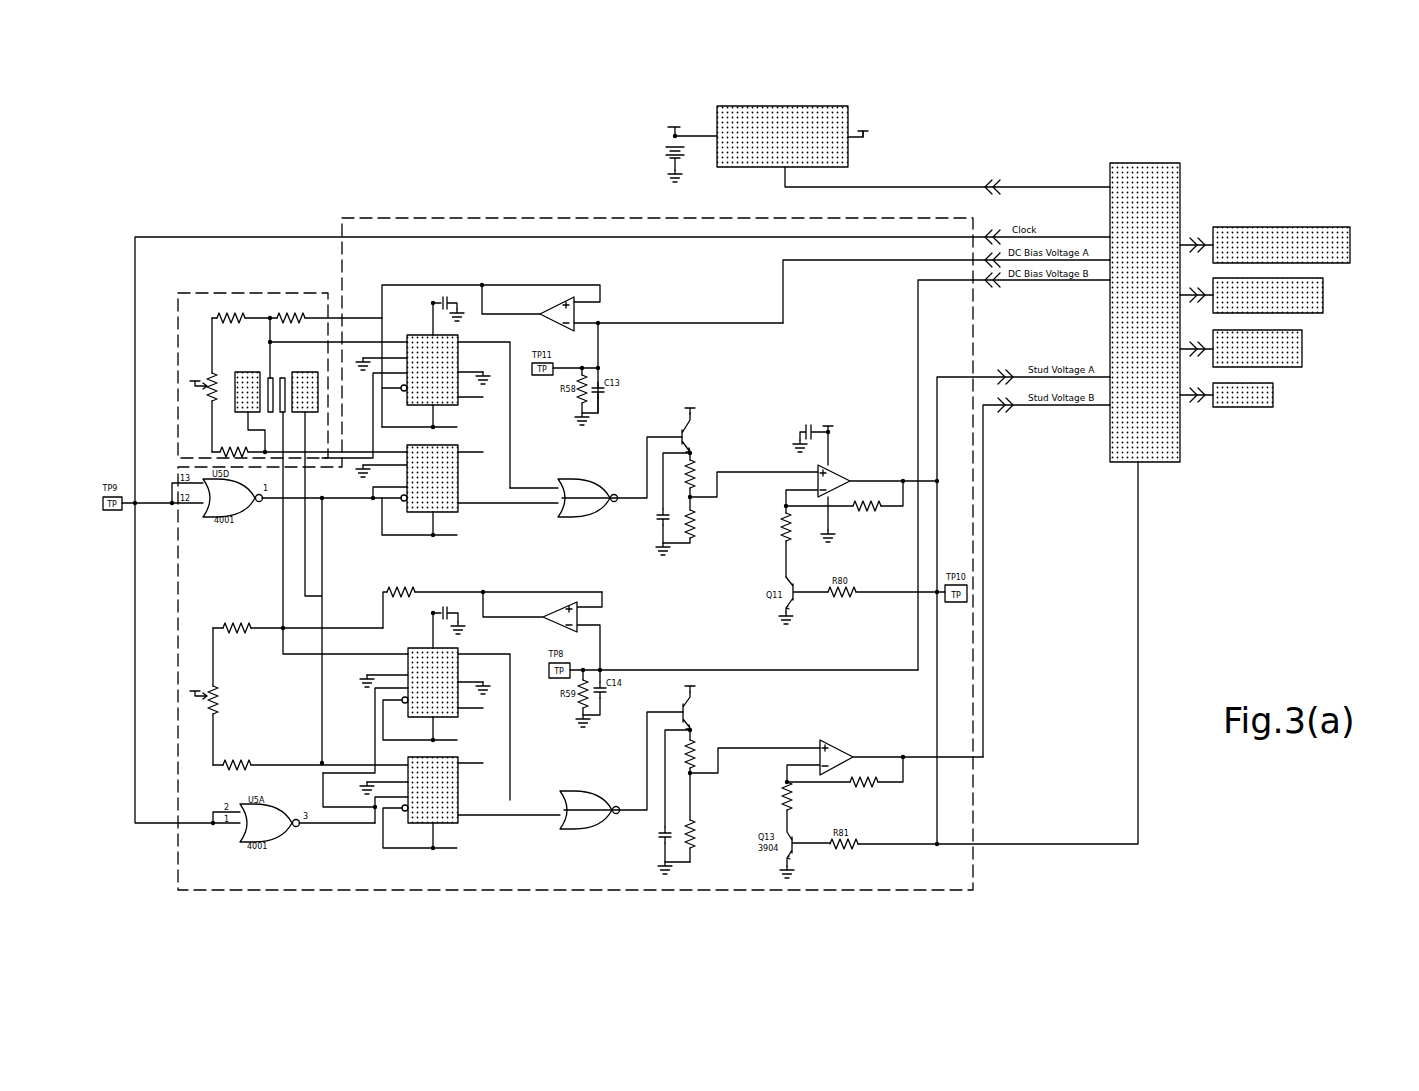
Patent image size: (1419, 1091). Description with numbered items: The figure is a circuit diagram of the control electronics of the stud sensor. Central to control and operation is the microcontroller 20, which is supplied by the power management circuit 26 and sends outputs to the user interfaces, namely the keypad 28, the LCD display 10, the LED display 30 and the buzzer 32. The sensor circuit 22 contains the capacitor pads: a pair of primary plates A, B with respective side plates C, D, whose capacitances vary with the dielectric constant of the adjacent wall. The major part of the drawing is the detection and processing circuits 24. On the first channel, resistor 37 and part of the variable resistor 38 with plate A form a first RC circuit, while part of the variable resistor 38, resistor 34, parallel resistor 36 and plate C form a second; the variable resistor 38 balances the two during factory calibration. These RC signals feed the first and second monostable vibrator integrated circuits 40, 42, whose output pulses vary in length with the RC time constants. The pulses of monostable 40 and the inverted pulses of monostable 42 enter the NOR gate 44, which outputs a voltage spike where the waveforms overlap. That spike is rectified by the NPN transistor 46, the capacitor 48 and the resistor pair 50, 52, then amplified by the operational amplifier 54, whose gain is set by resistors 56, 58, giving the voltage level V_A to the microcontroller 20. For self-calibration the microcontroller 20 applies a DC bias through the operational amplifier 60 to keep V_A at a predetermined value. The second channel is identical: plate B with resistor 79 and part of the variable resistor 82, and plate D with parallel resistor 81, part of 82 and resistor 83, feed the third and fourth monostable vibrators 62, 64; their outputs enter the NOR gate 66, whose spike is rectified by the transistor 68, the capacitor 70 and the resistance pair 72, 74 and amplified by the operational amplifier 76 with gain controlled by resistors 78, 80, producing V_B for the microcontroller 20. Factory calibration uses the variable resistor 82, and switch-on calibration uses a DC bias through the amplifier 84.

The LCD display 10 is at (1318, 305).
The microcontroller 20 is at (1170, 456).
The sensor circuit 22 is at (195, 292).
The detection and processing circuits 24 is at (540, 218).
The power management circuit 26 is at (790, 122).
The keypad 28 is at (1263, 228).
The LED display 30 is at (1300, 357).
The buzzer 32 is at (1275, 400).
The resistor 34 is at (228, 312).
The resistor 36 is at (292, 313).
The resistor 37 is at (226, 447).
The variable resistor 38 is at (208, 368).
The first monostable vibrator integrated circuit 40 is at (460, 478).
The second monostable vibrator integrated circuit 42 is at (398, 335).
The NOR gate 44 is at (585, 490).
The NPN transistor 46 is at (647, 432).
The capacitor 48 is at (657, 514).
The resistor 50 is at (695, 460).
The resistor 52 is at (695, 532).
The operational amplifier 54 is at (837, 470).
The resistor 56 is at (873, 507).
The resistor 58 is at (783, 527).
The operational amplifier 60 is at (560, 297).
The third monostable vibrator 62 is at (457, 787).
The fourth monostable vibrator 64 is at (403, 647).
The NOR gate 66 is at (585, 792).
The transistor 68 is at (693, 704).
The capacitor 70 is at (660, 828).
The resistor 72 is at (692, 740).
The resistor 74 is at (690, 845).
The operational amplifier 76 is at (835, 739).
The resistor 78 is at (878, 792).
The resistor 79 is at (223, 772).
The resistor 80 is at (782, 814).
The resistor 81 is at (223, 628).
The variable resistor 82 is at (218, 693).
The resistor 83 is at (393, 589).
The amplifier 84 is at (592, 622).